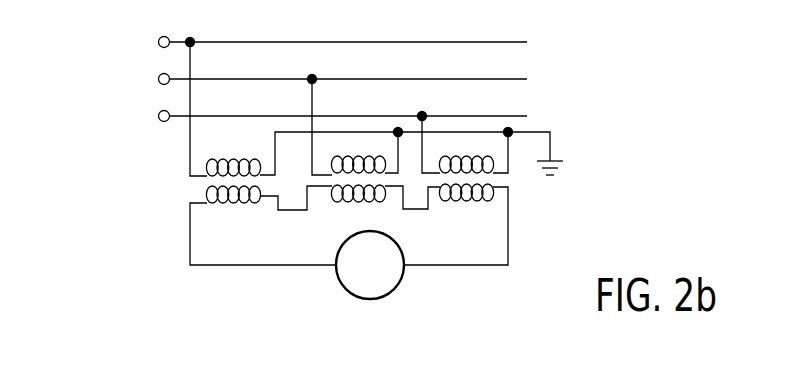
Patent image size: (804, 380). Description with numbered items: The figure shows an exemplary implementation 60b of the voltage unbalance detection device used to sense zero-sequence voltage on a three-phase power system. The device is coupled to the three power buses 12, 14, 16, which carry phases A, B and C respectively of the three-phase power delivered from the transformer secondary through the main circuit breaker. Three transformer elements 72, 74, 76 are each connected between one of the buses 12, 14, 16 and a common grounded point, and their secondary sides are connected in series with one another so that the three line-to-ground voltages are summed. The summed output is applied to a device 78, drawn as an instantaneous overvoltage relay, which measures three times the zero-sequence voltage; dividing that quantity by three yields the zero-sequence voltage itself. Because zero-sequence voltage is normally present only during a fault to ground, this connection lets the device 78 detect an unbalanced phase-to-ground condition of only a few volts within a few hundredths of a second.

The three-phase transformer circuit 60b is at (80, 40).
The power bus 12 is at (527, 42).
The power bus 14 is at (527, 79).
The power bus 16 is at (527, 116).
The first transformer 72 is at (248, 208).
The second transformer 74 is at (383, 206).
The third transformer 76 is at (487, 206).
The instantaneous overvoltage relay 78 is at (350, 297).